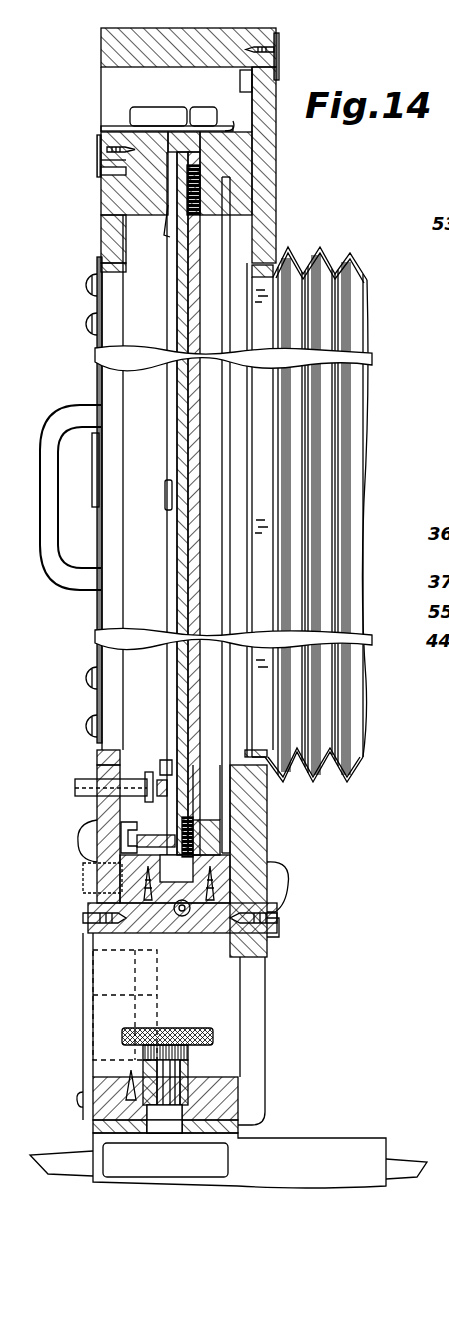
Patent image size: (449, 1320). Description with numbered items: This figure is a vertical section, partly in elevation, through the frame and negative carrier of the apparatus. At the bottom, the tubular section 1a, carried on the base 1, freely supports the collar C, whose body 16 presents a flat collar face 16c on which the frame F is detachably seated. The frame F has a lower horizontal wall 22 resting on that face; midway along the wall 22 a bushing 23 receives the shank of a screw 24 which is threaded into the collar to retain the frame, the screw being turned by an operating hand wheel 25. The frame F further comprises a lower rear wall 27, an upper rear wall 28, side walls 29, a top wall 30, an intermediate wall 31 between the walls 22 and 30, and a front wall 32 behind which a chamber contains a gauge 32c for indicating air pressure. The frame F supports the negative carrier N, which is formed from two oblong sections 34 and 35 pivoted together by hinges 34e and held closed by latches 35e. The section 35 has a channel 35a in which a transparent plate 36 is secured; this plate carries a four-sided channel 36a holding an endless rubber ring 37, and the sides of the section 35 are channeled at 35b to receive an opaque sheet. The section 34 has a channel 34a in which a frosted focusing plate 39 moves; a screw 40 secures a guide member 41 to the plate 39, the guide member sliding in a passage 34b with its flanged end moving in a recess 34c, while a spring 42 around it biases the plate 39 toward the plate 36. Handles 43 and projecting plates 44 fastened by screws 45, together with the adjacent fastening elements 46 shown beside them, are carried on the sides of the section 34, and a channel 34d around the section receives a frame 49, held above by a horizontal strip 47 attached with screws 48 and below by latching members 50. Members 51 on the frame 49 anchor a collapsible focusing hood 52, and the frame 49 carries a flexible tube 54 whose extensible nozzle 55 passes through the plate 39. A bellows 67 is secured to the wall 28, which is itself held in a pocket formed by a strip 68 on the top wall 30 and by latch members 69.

The tubular section base 1 is at (50, 1160).
The tubular section 1a is at (404, 1166).
The collar body 16 is at (302, 1140).
The flat collar face 16c is at (218, 1132).
The lower horizontal wall 22 is at (85, 1082).
The bushing 23 is at (200, 1082).
The screw 24 is at (160, 1128).
The operating hand wheel 25 is at (182, 1030).
The lower rear wall 27 is at (258, 1030).
The upper rear wall 28 is at (268, 96).
The side wall 29 is at (113, 90).
The top wall 30 is at (110, 45).
The intermediate wall 31 is at (100, 935).
The front wall 32 is at (258, 770).
The gauge 32c is at (93, 972).
The carrier section 34 is at (101, 130).
The channel 34a is at (86, 876).
The passage 34b is at (84, 858).
The recess 34c is at (121, 838).
The channel 34d is at (112, 173).
The hinges 34e is at (157, 933).
The carrier section 35 is at (244, 192).
The channel 35a is at (285, 866).
The channel 35b is at (285, 782).
The latches 35e is at (231, 120).
The transparent plate 36 is at (200, 215).
The four-sided channel 36a is at (200, 170).
The rubber ring 37 is at (205, 845).
The plate 39 is at (176, 560).
The screw 40 is at (150, 800).
The guide member 41 is at (137, 843).
The spring 42 is at (166, 220).
The handle 43 is at (50, 498).
The plate 44 is at (97, 346).
The screws 45 is at (86, 330).
The stud 46 is at (88, 290).
The horizontal strip 47 is at (108, 160).
The screws 48 is at (97, 148).
The frame 49 is at (108, 235).
The latching members 50 is at (88, 908).
The members 51 is at (112, 327).
The collapsible focusing hood 52 is at (100, 652).
The flexible tube 54 is at (80, 782).
The extensible nozzle 55 is at (142, 780).
The bellows 67 is at (358, 385).
The strip 68 is at (279, 47).
The latch members 69 is at (282, 902).
The collar C is at (84, 1140).
The frame F is at (268, 948).
The negative carrier N is at (90, 804).